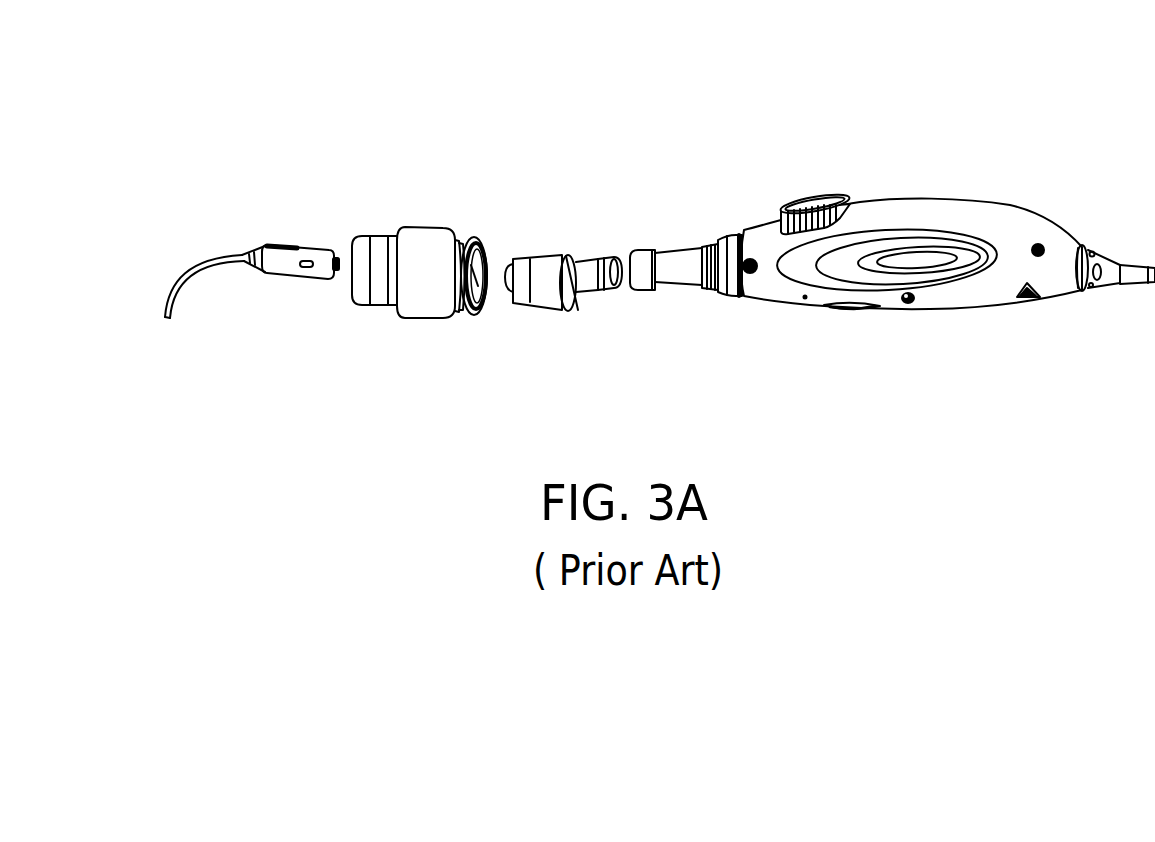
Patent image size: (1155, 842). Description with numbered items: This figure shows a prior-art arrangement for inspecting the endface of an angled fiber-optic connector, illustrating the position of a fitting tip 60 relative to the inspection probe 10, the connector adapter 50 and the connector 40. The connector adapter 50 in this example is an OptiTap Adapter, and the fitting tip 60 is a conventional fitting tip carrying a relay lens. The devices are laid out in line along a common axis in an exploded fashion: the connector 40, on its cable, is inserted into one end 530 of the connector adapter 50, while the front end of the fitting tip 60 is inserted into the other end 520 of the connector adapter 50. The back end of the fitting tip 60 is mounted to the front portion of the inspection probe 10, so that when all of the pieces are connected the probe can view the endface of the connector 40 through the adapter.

The inspection probe 10 is at (758, 213).
The connector 40 is at (288, 243).
The connector adapter 50 is at (423, 232).
The fitting tip 60 is at (556, 240).
The other end of the connector adapter 520 is at (473, 283).
The one end of the connector adapter 530 is at (348, 277).